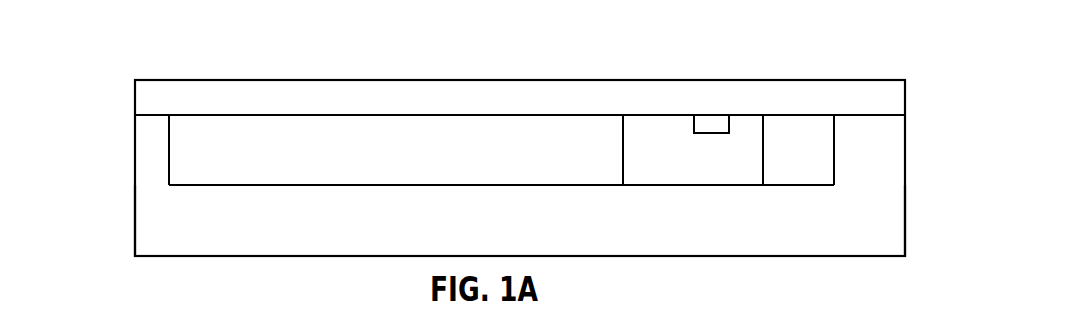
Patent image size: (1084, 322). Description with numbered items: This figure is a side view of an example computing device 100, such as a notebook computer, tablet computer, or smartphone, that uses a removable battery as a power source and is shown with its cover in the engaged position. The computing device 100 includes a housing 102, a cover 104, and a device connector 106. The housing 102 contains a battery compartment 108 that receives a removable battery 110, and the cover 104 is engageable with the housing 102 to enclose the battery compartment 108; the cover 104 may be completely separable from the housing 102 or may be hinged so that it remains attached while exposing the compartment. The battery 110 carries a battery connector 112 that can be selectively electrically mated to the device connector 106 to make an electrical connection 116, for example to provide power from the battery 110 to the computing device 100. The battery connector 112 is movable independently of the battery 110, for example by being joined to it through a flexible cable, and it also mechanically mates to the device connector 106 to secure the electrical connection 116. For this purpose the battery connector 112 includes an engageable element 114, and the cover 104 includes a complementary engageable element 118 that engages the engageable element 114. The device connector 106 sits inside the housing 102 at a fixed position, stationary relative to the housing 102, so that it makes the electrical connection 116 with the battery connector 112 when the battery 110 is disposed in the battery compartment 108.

The computing device 100 is at (269, 58).
The housing 102 is at (135, 247).
The cover 104 is at (133, 98).
The device connector 106 is at (818, 174).
The battery compartment 108 is at (160, 168).
The battery 110 is at (185, 146).
The battery connector 112 is at (663, 140).
The engageable element 114 is at (741, 121).
The electrical connection 116 is at (774, 150).
The complementary engageable element 118 is at (712, 123).